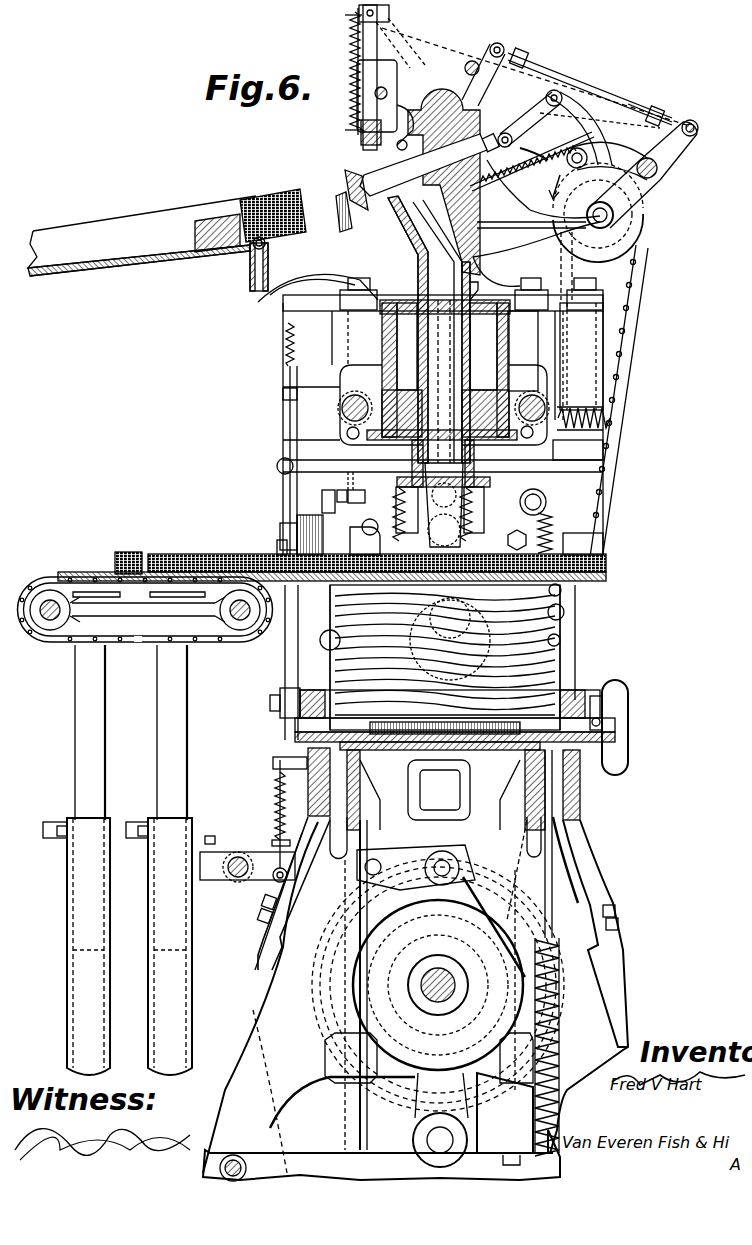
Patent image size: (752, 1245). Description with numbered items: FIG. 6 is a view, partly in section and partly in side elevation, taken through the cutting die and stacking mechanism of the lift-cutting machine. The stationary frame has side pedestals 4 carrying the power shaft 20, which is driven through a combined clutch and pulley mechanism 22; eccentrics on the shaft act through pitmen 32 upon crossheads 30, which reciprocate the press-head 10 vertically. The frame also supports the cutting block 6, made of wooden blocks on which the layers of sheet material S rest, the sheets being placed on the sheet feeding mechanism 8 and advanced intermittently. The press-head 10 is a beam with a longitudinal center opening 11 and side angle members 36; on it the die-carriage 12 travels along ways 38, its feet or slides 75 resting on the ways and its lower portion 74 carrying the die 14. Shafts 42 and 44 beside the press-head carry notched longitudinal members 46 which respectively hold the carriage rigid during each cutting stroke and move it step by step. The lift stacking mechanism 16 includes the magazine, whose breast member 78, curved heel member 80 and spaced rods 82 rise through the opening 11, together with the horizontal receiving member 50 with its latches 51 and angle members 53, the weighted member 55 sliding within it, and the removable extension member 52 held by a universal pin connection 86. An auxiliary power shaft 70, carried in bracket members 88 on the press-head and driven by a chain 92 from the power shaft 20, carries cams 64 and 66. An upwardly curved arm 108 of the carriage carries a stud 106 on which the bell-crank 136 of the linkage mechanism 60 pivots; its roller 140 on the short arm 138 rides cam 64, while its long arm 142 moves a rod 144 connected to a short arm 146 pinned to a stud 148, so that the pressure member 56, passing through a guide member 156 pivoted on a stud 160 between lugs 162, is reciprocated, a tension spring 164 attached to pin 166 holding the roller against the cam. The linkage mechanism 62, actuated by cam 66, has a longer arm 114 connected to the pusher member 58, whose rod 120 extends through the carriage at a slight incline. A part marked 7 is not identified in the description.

The side pedestals 4 is at (272, 1024).
The cutting block 6 is at (560, 630).
The spring 7 is at (570, 953).
The sheet feeding mechanism 8 is at (238, 632).
The reciprocating press-head 10 is at (384, 334).
The longitudinal center opening 11 is at (482, 296).
The die-carriage 12 is at (420, 290).
The die 14 is at (444, 505).
The lift stacking mechanism 16 is at (536, 77).
The power shaft 20 is at (520, 985).
The combined clutch and pulley mechanism 22 is at (626, 988).
The crossheads 30 is at (438, 996).
The pitmen 32 is at (420, 1095).
The side angle members 36 is at (448, 346).
The ways 38 is at (520, 296).
The shaft 42 is at (340, 408).
The shaft 44 is at (575, 446).
The notched longitudinal members 46 is at (342, 420).
The receiving member 50 is at (290, 190).
The latches 51 is at (362, 176).
The removable extension member 52 is at (68, 225).
The angle members 53 is at (348, 178).
The weighted member 55 is at (210, 222).
The pressure member 56 is at (372, 44).
The pusher member 58 is at (296, 272).
The linkage mechanism 60 is at (585, 84).
The linkage mechanism 62 is at (523, 124).
The cam 64 is at (630, 200).
The cam 66 is at (645, 222).
The auxiliary power shaft 70 is at (645, 252).
The lower portion 74 is at (400, 465).
The feet or slides 75 is at (348, 292).
The breast member 78 is at (508, 344).
The heel member 80 is at (407, 346).
The rods 82 is at (482, 222).
The universal pin connection 86 is at (250, 278).
The bracket members 88 is at (575, 290).
The chain 92 is at (622, 330).
The stud 106 is at (660, 172).
The arm 108 is at (536, 254).
The longer arm 114 is at (603, 127).
The rod 120 is at (495, 145).
The bell-crank 136 is at (691, 147).
The short arm 138 is at (597, 155).
The roller 140 is at (585, 135).
The long arm 142 is at (680, 145).
The rod 144 is at (630, 105).
The short arm 146 is at (485, 66).
The stud 148 is at (480, 74).
The guide member 156 is at (364, 80).
The stud 160 is at (375, 95).
The lugs 162 is at (388, 94).
The tension spring 164 is at (354, 62).
The pin 166 is at (352, 18).
The sheet material S is at (218, 554).